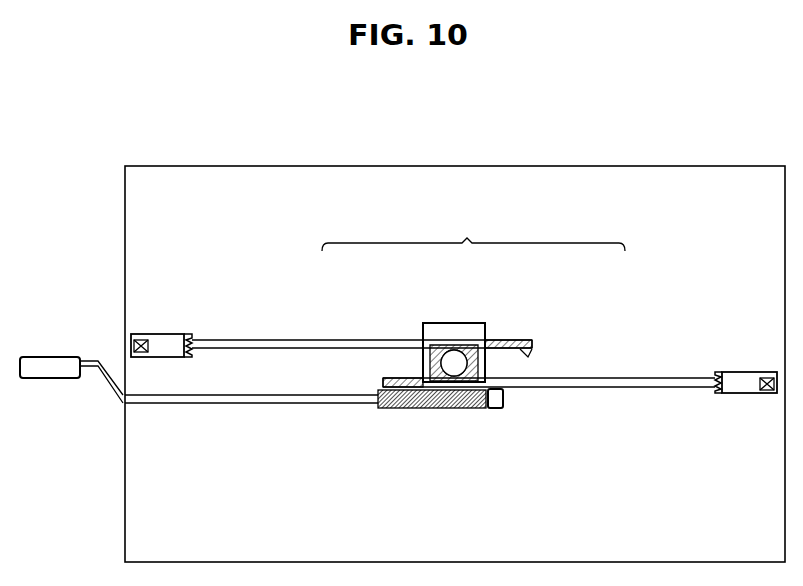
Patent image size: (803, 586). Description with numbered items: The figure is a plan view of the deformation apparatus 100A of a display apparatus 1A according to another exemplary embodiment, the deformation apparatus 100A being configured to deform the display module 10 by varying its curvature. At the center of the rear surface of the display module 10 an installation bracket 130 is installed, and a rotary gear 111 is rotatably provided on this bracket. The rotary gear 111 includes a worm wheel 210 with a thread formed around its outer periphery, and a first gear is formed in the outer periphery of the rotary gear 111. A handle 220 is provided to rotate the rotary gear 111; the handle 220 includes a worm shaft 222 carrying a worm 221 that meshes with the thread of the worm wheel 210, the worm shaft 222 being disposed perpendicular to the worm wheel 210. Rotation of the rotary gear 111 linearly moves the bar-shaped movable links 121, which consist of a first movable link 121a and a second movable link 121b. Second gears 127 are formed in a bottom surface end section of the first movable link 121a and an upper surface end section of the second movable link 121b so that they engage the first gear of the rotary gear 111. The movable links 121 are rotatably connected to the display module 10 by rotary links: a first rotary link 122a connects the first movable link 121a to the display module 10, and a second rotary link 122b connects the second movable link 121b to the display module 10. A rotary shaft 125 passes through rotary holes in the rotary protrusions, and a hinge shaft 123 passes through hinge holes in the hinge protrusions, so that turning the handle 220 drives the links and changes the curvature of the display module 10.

The display apparatus 1A is at (505, 116).
The display module 10 is at (697, 165).
The deformation apparatus 100A is at (672, 279).
The rotary gear 111 is at (482, 365).
The movable links 121 is at (473, 236).
The first movable link 121a is at (350, 340).
The second movable link 121b is at (605, 378).
The first rotary link 122a is at (165, 334).
The second rotary link 122b is at (740, 372).
The hinge shaft 123 is at (192, 338).
The rotary shaft 125 is at (135, 333).
The second gears 127 is at (530, 357).
The installation bracket 130 is at (482, 340).
The worm wheel 210 is at (458, 322).
The handle 220 is at (57, 357).
The worm 221 is at (416, 408).
The worm shaft 222 is at (270, 403).